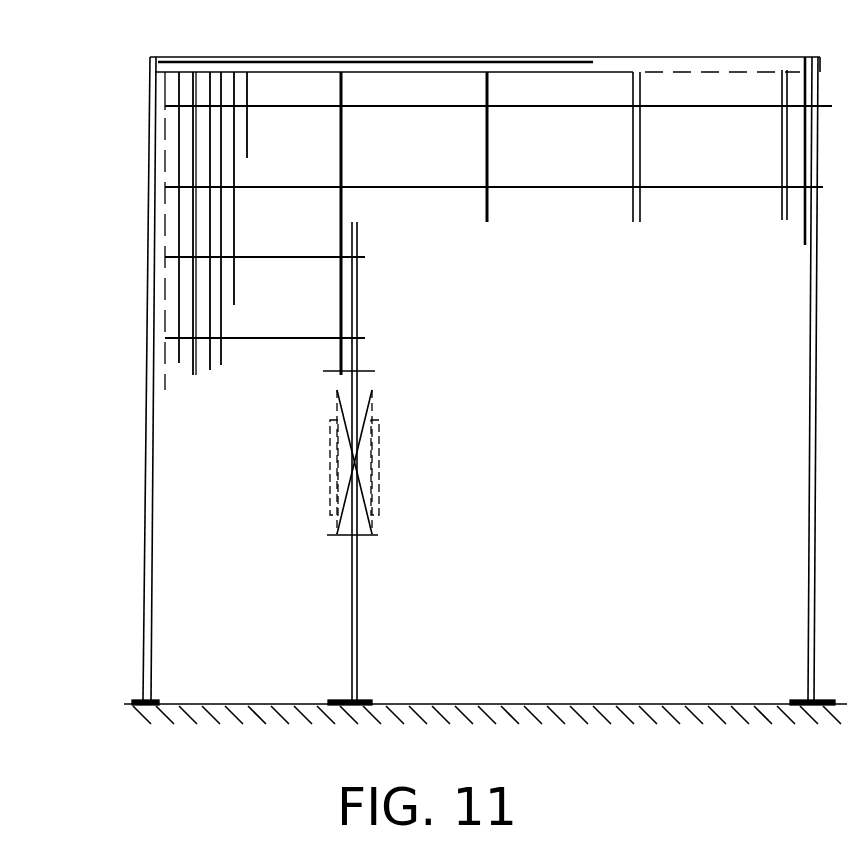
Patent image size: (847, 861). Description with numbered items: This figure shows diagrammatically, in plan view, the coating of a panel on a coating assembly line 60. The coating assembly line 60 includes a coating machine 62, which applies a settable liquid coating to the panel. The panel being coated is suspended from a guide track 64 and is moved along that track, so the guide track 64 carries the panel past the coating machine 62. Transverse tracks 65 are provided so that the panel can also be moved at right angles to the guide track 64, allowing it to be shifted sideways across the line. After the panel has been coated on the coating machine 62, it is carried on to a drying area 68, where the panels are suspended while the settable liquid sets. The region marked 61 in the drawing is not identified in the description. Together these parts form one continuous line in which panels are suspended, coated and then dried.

The coating assembly line 60 is at (440, 607).
The opening / panel area 61 is at (477, 521).
The coating machine 62 is at (377, 460).
The guide track 64 is at (357, 664).
The transverse tracks 65 is at (392, 108).
The drying area 68 is at (554, 188).